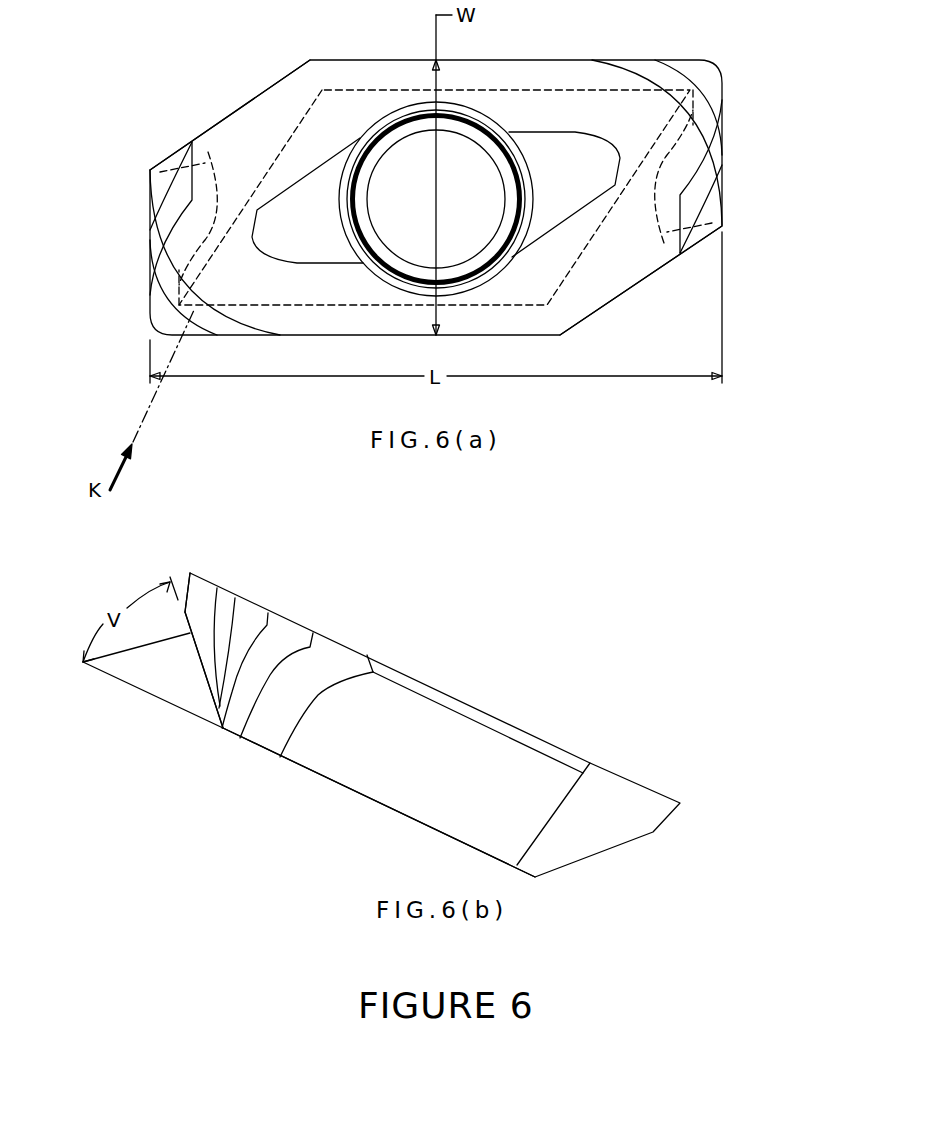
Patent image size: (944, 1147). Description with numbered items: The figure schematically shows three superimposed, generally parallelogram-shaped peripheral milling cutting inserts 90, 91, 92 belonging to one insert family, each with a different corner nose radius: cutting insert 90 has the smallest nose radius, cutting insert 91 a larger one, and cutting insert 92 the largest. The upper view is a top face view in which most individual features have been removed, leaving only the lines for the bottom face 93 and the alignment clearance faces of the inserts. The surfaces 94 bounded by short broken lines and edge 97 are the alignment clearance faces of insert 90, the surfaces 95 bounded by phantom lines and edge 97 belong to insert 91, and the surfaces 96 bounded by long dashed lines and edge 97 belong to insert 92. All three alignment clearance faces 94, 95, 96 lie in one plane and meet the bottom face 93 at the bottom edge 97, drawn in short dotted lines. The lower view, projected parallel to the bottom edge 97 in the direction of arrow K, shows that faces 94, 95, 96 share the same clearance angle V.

In FIG. 6A, the cutting insert 90 is at (722, 76).
In FIG. 6A, the cutting insert 91 is at (722, 136).
In FIG. 6A, the cutting insert 92 is at (150, 170).
In FIG. 6A, the bottom face 93 is at (540, 275).
In FIG. 6B, the bottom face 93 is at (337, 785).
In FIG. 6A, the alignment clearance faces 94 is at (238, 157).
In FIG. 6B, the alignment clearance faces 94 is at (216, 710).
In FIG. 6A, the alignment clearance faces 95 is at (205, 207).
In FIG. 6B, the alignment clearance faces 95 is at (217, 682).
In FIG. 6A, the alignment clearance faces 96 is at (168, 187).
In FIG. 6B, the alignment clearance faces 96 is at (190, 633).
In FIG. 6A, the bottom edge 97 is at (263, 157).